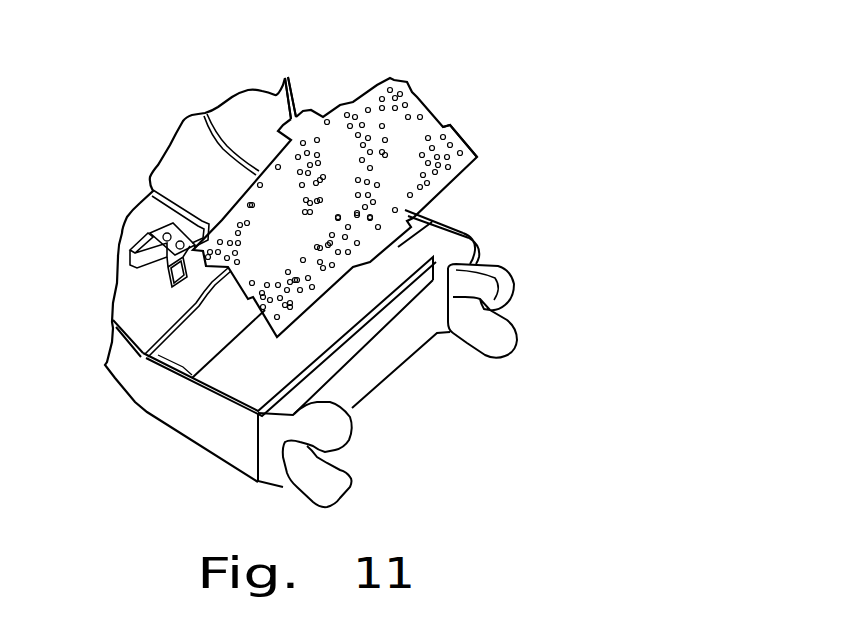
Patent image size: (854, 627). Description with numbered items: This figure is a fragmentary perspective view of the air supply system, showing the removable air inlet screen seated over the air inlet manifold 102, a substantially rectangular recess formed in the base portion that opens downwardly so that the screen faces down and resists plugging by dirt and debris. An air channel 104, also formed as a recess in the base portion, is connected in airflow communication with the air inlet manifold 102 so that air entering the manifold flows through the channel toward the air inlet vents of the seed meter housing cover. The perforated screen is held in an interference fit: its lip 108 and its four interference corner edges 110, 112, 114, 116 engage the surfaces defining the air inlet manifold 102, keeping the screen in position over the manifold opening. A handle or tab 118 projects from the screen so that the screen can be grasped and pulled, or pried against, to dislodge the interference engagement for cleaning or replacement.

The air inlet manifold 102 is at (407, 255).
The air channel 104 is at (207, 202).
The lip 108 is at (368, 262).
The interference corner edge 110 is at (195, 277).
The interference corner edge 112 is at (265, 314).
The interference corner edge 114 is at (405, 82).
The interference corner edge 116 is at (467, 137).
The handle or tab 118 is at (286, 119).